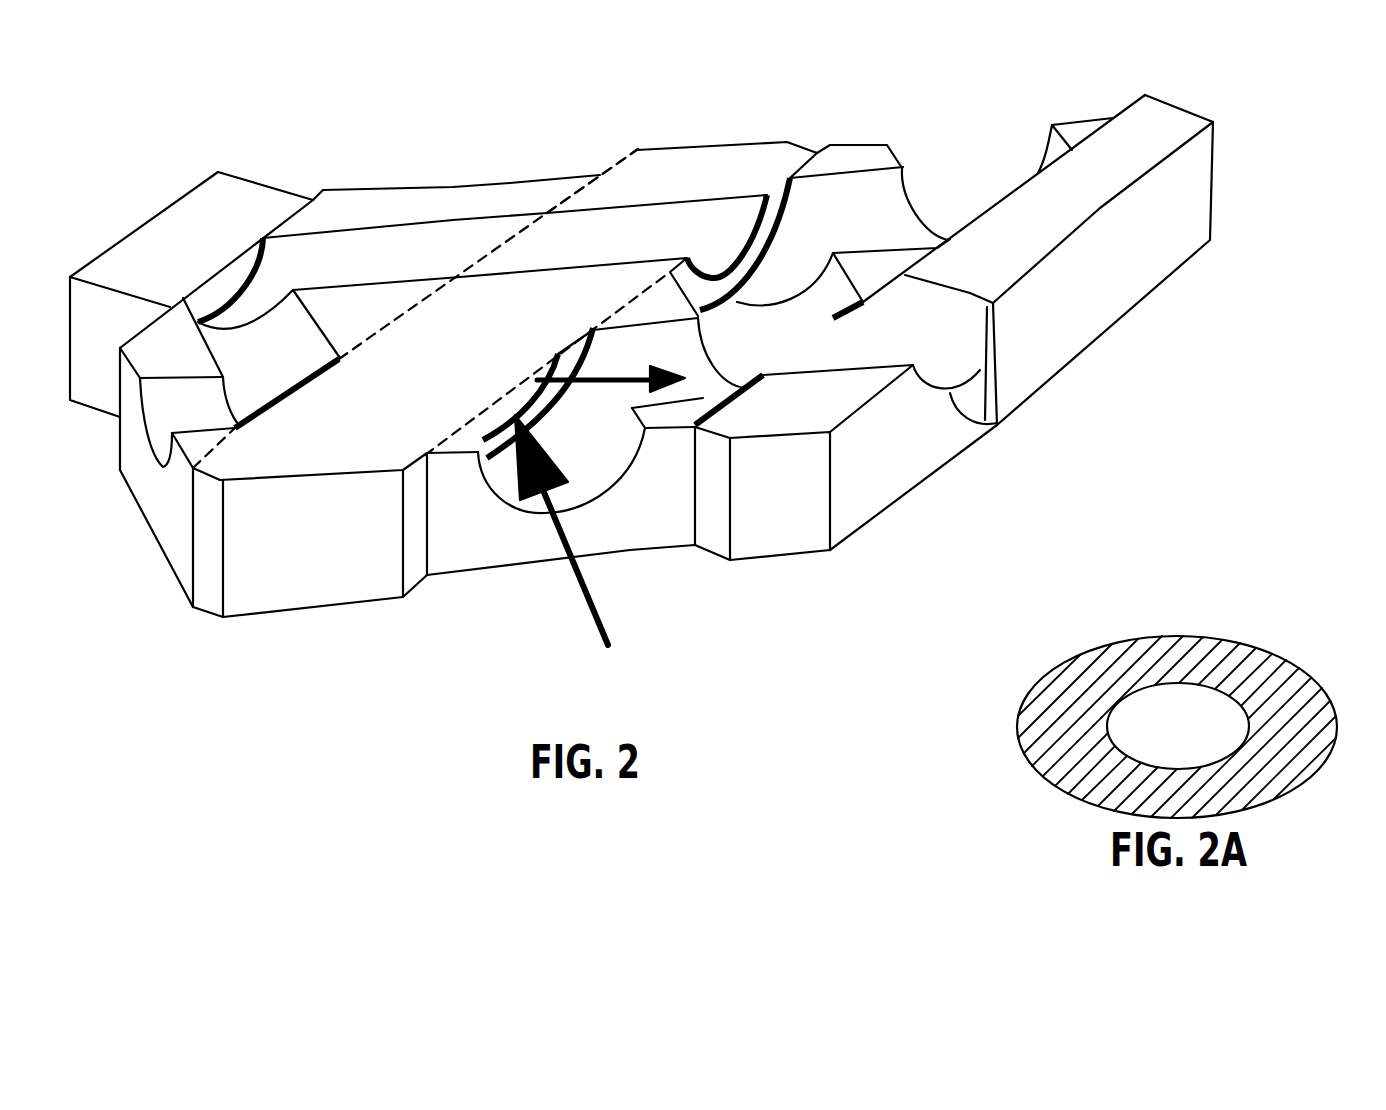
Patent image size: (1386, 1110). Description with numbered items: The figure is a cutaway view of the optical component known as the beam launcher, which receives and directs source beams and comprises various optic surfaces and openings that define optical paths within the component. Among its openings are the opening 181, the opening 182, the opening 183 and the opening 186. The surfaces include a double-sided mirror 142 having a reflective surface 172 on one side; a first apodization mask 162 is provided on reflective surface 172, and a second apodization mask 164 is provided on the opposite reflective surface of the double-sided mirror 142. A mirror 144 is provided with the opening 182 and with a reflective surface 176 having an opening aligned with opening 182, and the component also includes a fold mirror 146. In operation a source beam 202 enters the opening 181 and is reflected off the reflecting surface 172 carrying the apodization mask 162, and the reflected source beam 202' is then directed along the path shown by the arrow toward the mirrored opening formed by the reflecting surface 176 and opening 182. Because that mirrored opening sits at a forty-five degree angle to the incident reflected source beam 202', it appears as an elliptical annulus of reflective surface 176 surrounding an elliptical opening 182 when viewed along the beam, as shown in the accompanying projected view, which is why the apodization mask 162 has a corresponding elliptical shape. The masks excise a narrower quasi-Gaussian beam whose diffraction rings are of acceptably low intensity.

In FIG. 2, the double-sided mirror 142 is at (260, 613).
In FIG. 2, the mirror 144 is at (787, 557).
In FIG. 2, the fold mirror 146 is at (183, 198).
In FIG. 2, the first apodization mask 162 is at (495, 422).
In FIG. 2, the second apodization mask 164 is at (292, 394).
In FIG. 2, the reflective surface 172 is at (577, 338).
In FIG. 2A, the reflective surface 176 is at (1202, 677).
In FIG. 2, the opening 181 is at (507, 500).
In FIG. 2, the opening 182 is at (985, 433).
In FIG. 2A, the opening 182 is at (1209, 749).
In FIG. 2, the opening 183 is at (157, 543).
In FIG. 2, the opening 186 is at (982, 157).
In FIG. 2, the source beam 202 is at (610, 550).
In FIG. 2, the reflected source beam 202' is at (597, 332).